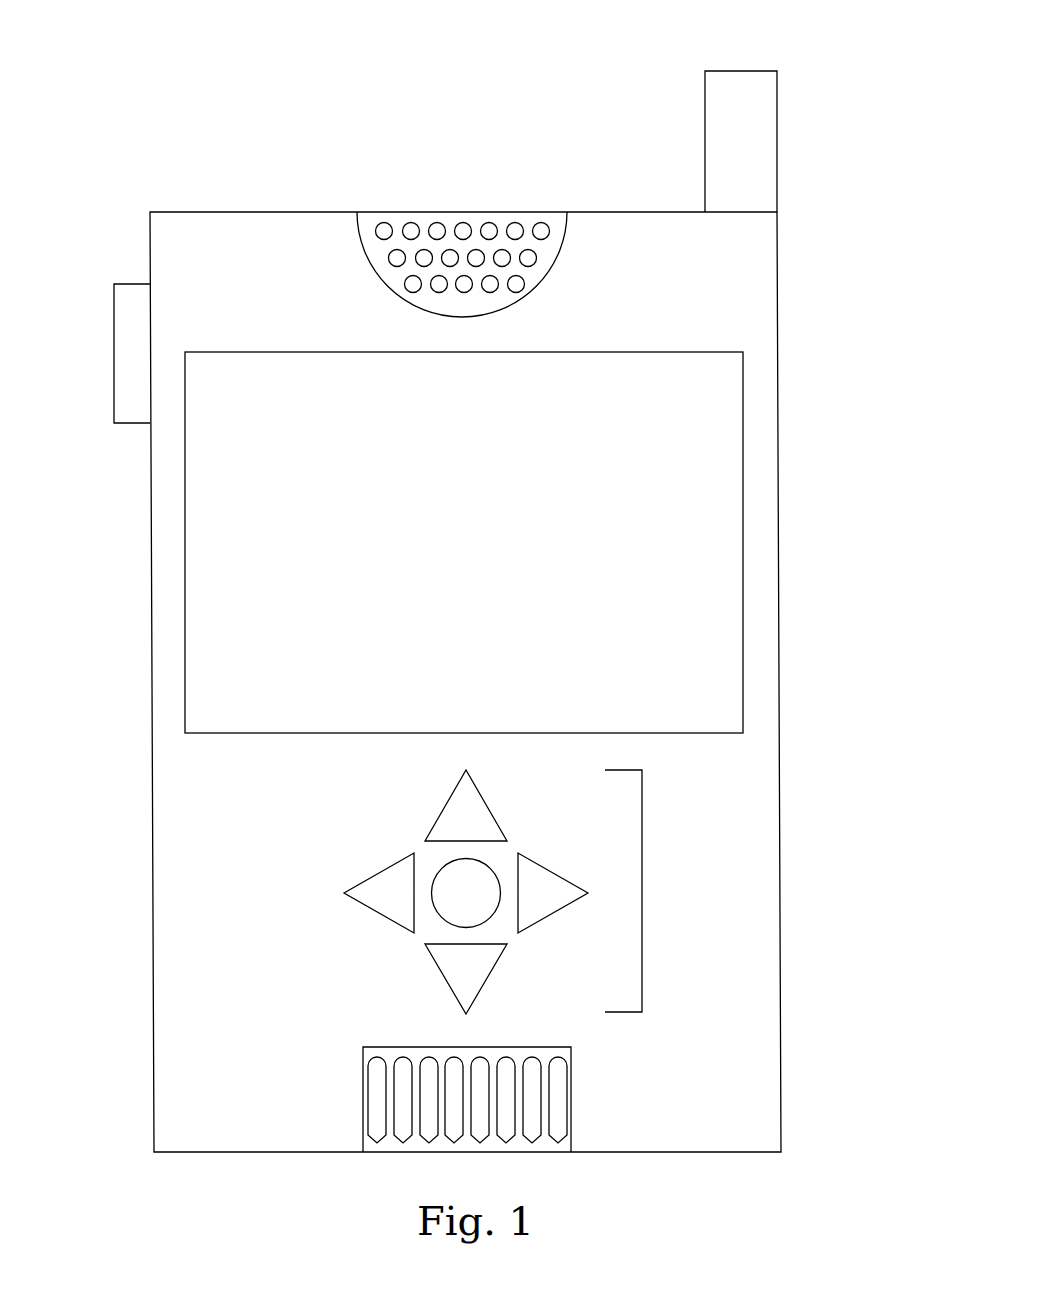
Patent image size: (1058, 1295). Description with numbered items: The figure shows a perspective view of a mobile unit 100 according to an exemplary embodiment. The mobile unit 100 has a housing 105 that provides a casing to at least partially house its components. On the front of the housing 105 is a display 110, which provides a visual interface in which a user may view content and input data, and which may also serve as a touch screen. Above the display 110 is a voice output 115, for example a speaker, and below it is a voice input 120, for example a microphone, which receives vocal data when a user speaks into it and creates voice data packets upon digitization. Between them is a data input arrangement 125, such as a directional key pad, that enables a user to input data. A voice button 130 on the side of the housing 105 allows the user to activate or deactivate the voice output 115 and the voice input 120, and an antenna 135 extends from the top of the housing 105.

The mobile unit 100 is at (844, 105).
The housing 105 is at (780, 1097).
The display 110 is at (743, 541).
The voice output 115 is at (462, 212).
The voice input 120 is at (363, 1102).
The data input arrangement 125 is at (642, 891).
The voice button 130 is at (114, 423).
The antenna 135 is at (705, 140).